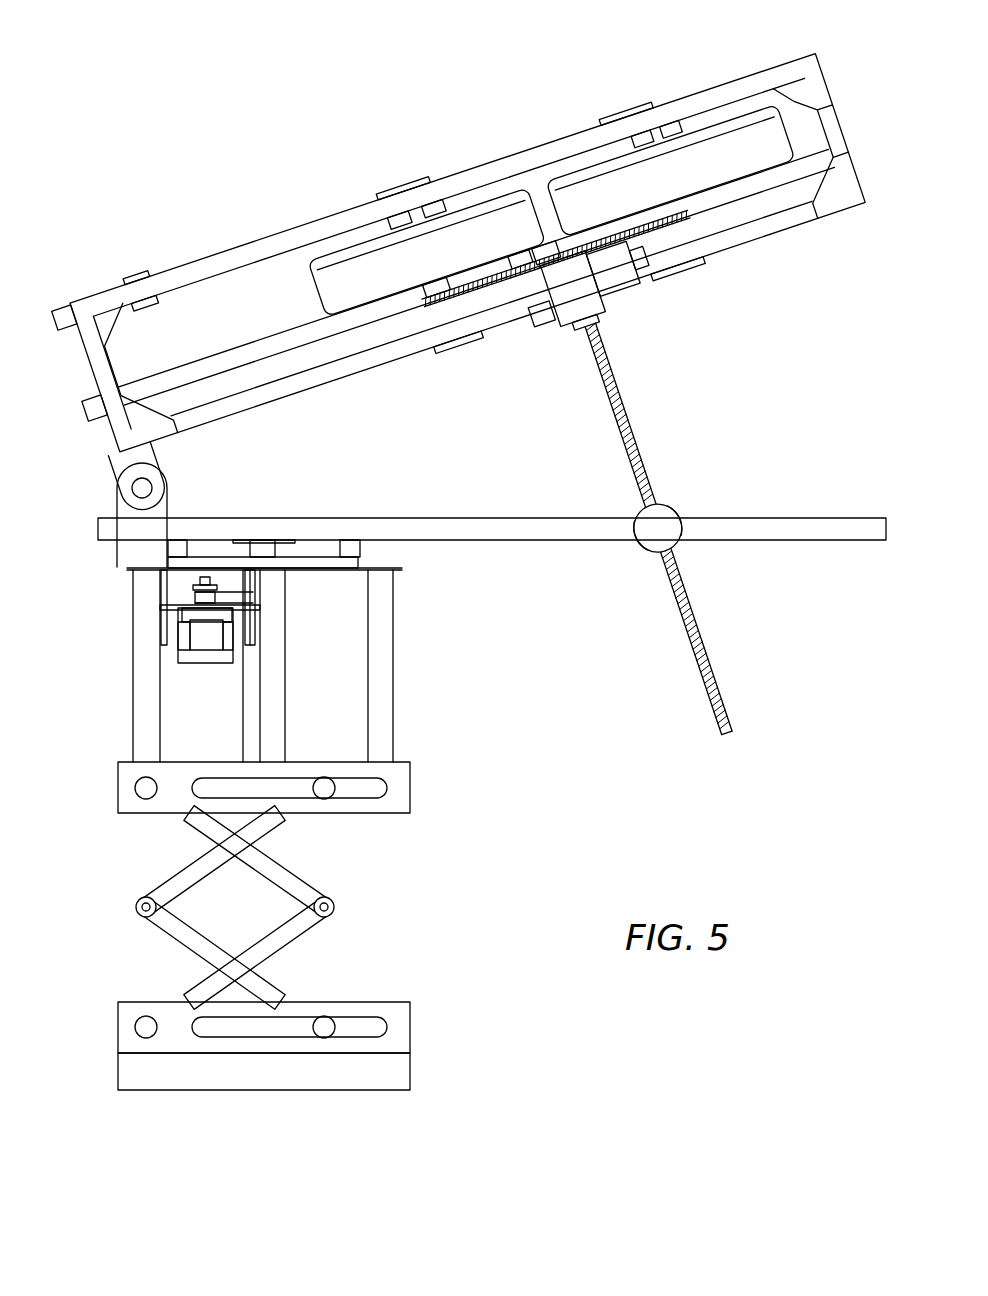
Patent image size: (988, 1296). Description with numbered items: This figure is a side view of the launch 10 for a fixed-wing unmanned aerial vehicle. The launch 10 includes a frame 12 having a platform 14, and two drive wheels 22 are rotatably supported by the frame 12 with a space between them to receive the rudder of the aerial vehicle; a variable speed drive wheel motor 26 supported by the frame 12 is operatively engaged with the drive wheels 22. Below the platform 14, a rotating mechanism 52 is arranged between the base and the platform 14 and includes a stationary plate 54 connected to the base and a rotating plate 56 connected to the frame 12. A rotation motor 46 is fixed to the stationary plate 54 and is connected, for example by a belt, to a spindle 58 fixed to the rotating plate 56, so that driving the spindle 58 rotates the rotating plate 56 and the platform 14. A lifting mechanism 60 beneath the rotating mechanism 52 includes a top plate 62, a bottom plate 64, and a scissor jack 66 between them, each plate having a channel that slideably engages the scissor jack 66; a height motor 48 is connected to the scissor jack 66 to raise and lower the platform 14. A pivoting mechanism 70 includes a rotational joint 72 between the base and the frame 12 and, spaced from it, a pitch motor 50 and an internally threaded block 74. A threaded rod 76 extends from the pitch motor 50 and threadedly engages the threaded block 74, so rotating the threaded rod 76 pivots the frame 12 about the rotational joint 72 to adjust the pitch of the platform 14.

The launch 10 is at (166, 74).
The frame 12 is at (850, 232).
The platform 14 is at (712, 90).
The drive wheels 22 is at (365, 268).
The variable speed drive wheel motor 26 is at (575, 324).
The rotation motor 46 is at (205, 657).
The height motor 48 is at (118, 1067).
The pitch motor 50 is at (620, 297).
The rotating mechanism 52 is at (183, 593).
The stationary plate 54 is at (396, 556).
The rotating plate 56 is at (358, 566).
The spindle 58 is at (257, 590).
The lifting mechanism 60 is at (122, 946).
The top plate 62 is at (412, 773).
The bottom plate 64 is at (412, 1013).
The scissor jack 66 is at (325, 890).
The pivoting mechanism 70 is at (650, 385).
The rotational joint 72 is at (130, 503).
The internally threaded block 74 is at (653, 540).
The threaded rod 76 is at (647, 466).